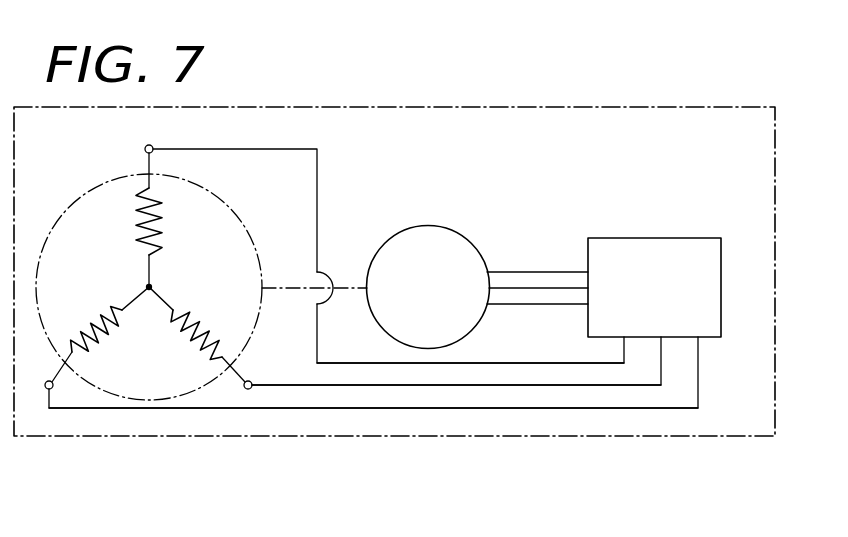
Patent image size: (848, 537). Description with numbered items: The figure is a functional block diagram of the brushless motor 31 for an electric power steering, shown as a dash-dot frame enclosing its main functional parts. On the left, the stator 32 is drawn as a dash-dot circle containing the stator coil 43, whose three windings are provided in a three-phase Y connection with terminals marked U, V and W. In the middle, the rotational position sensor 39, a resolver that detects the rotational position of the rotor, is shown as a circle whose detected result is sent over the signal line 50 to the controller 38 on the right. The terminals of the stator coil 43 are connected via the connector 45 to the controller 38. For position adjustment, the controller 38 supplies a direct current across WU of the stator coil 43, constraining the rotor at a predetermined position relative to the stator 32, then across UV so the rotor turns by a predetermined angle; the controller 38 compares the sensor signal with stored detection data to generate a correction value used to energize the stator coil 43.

The brushless motor 31 is at (707, 107).
The stator 32 is at (229, 201).
The stator coil 43 is at (113, 305).
The rotational position sensor 39 is at (434, 248).
The signal line 50 is at (522, 304).
The controller 38 is at (639, 255).
The connector 45 is at (538, 363).